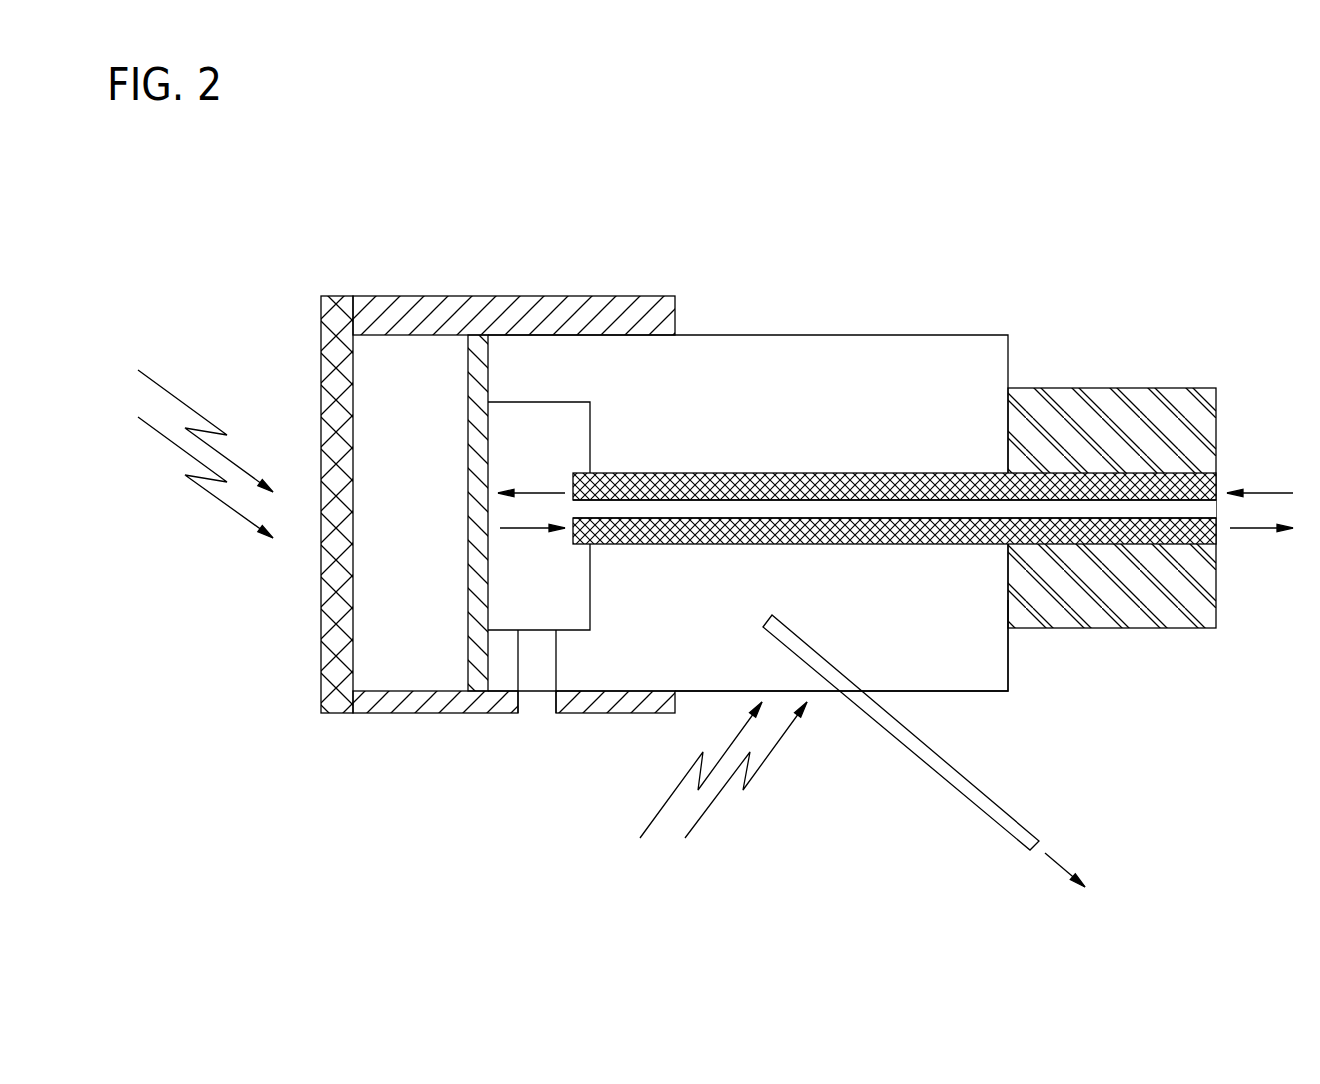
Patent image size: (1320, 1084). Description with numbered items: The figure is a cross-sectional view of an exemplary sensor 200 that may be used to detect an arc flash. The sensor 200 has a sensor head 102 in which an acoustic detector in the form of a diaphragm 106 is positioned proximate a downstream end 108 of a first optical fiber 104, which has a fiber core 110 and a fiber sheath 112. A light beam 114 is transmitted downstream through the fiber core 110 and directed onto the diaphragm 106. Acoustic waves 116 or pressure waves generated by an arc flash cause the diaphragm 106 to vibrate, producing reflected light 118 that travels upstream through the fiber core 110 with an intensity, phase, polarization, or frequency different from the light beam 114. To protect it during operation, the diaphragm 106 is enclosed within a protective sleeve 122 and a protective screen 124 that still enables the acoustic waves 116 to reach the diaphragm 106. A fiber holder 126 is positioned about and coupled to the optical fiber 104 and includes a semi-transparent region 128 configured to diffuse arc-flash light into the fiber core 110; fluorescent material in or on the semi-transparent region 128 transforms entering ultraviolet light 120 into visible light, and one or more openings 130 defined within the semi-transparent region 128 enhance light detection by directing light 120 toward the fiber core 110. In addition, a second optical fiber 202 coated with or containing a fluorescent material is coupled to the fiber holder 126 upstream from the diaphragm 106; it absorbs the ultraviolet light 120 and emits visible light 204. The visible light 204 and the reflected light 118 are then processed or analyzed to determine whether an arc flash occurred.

The sensor 200 is at (965, 222).
The sensor head 102 is at (300, 236).
The optical fiber 104 is at (1180, 473).
The diaphragm 106 is at (478, 383).
The downstream end 108 is at (571, 478).
The fiber core 110 is at (1170, 540).
The fiber sheath 112 is at (1128, 532).
The light beam 114 is at (538, 492).
The acoustic waves 116 is at (175, 395).
The reflected light 118 is at (528, 530).
The ultraviolet light 120 is at (755, 773).
The protective sleeve 122 is at (645, 303).
The protective screen 124 is at (335, 638).
The fiber holder 126 is at (977, 680).
The semi-transparent region 128 is at (823, 365).
The openings 130 is at (537, 697).
The second optical fiber 202 is at (980, 812).
The visible light 204 is at (1055, 860).